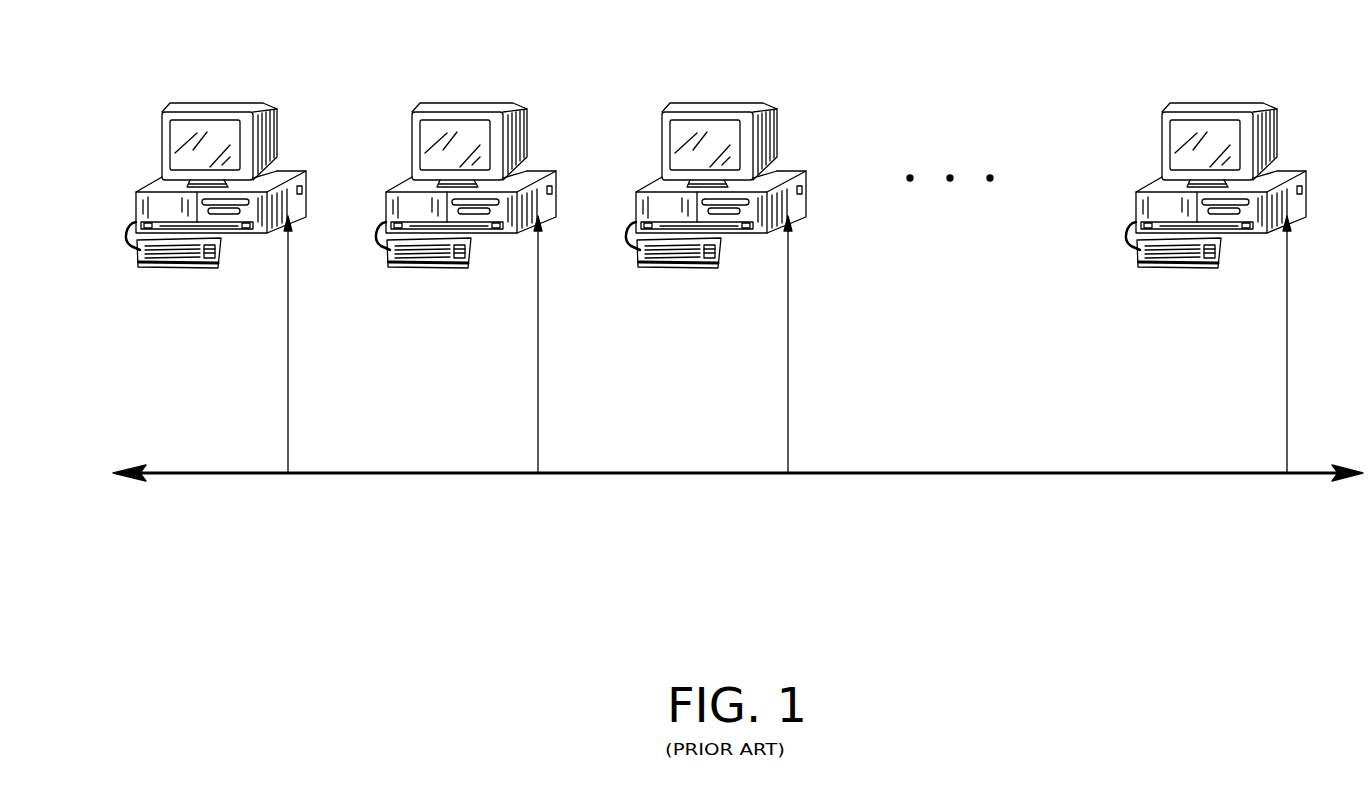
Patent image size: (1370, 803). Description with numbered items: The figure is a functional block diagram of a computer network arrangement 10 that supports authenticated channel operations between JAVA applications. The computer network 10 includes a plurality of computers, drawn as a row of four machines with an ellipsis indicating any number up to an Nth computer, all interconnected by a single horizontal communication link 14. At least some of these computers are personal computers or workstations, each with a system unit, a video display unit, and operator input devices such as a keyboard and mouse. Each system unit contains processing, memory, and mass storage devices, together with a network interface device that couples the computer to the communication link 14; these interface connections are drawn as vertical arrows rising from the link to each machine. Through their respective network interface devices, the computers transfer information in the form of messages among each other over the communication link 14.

The computer network arrangement 10 is at (739, 609).
The communication link 14 is at (1027, 472).